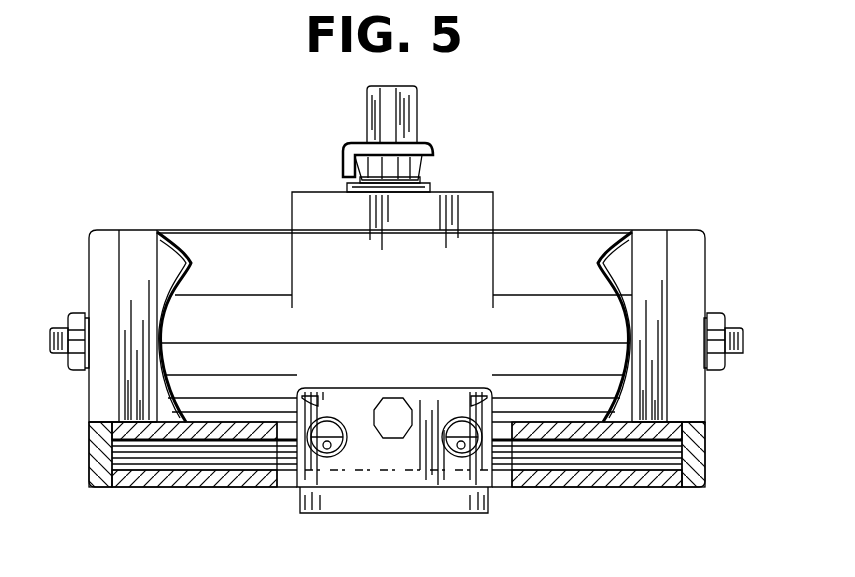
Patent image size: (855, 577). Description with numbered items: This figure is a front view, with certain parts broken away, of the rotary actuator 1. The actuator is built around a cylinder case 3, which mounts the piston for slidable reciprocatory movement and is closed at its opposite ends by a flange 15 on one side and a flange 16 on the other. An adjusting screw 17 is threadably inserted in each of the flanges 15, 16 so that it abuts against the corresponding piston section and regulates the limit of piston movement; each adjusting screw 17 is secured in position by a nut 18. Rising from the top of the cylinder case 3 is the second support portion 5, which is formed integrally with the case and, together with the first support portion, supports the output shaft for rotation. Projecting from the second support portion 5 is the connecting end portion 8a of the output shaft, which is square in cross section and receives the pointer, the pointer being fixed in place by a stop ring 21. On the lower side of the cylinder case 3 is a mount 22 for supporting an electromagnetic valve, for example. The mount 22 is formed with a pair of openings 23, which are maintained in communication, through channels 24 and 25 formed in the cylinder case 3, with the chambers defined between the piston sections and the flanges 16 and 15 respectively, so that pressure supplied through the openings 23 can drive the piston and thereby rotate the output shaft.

The rotary actuator 1 is at (578, 228).
The cylinder case 3 is at (207, 228).
The second support portion 5 is at (292, 205).
The connecting end portion 8a is at (420, 104).
The flange 15 is at (104, 240).
The flange 16 is at (688, 240).
The adjusting screw 17 is at (58, 358).
The nut 18 is at (80, 336).
The stop ring 21 is at (366, 141).
The mount 22 is at (438, 403).
The openings 23 is at (337, 450).
The channel 24 is at (613, 460).
The channel 25 is at (168, 460).